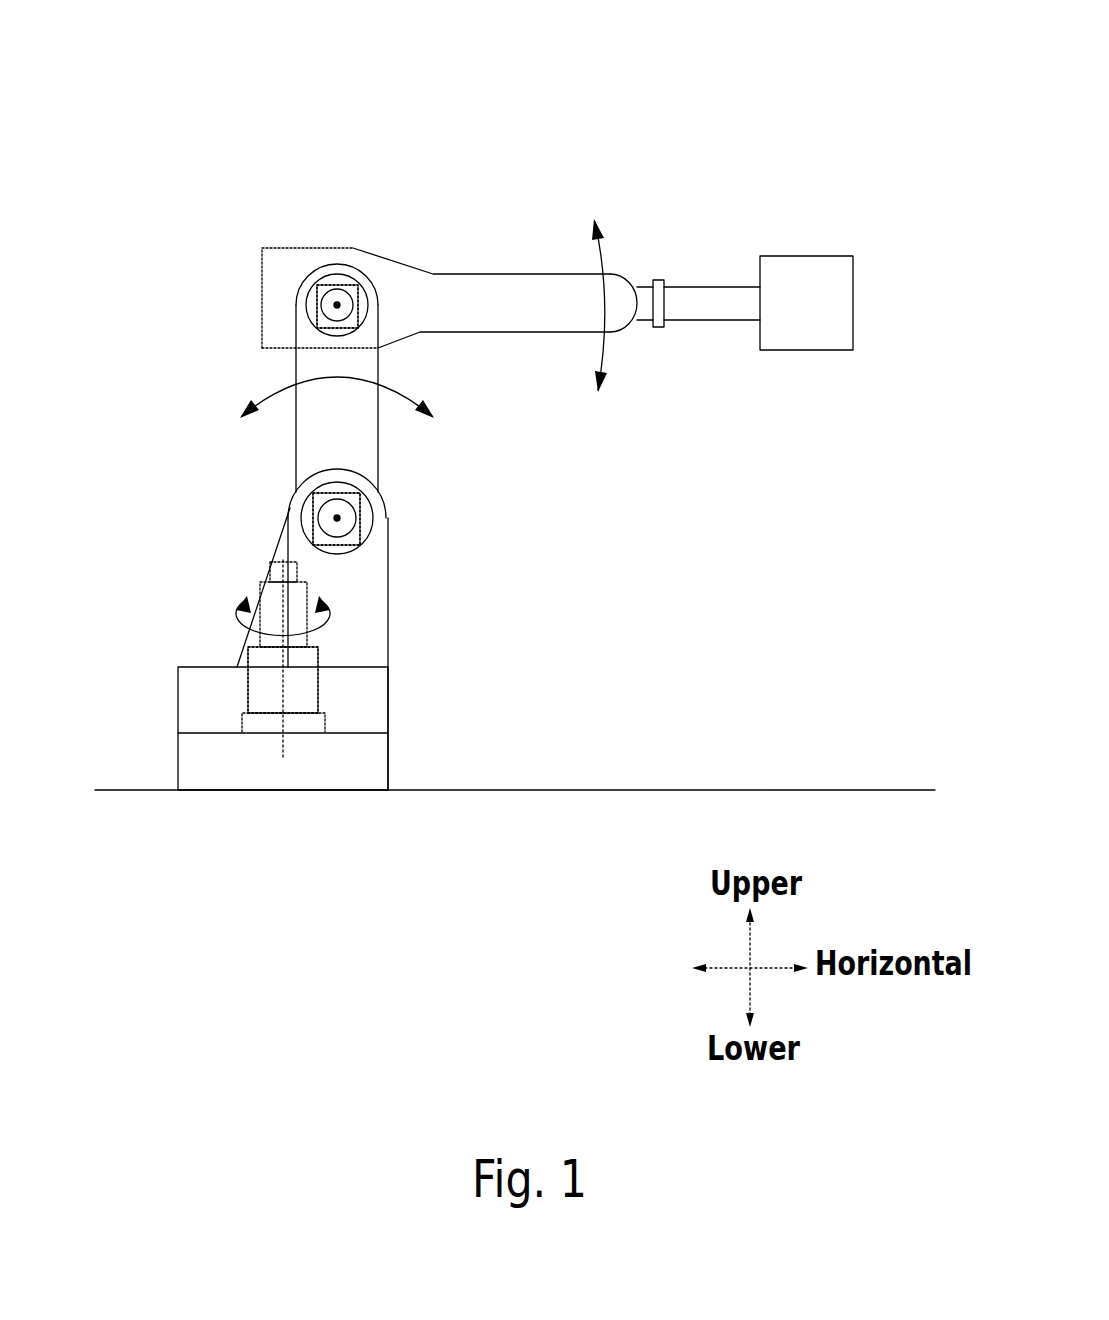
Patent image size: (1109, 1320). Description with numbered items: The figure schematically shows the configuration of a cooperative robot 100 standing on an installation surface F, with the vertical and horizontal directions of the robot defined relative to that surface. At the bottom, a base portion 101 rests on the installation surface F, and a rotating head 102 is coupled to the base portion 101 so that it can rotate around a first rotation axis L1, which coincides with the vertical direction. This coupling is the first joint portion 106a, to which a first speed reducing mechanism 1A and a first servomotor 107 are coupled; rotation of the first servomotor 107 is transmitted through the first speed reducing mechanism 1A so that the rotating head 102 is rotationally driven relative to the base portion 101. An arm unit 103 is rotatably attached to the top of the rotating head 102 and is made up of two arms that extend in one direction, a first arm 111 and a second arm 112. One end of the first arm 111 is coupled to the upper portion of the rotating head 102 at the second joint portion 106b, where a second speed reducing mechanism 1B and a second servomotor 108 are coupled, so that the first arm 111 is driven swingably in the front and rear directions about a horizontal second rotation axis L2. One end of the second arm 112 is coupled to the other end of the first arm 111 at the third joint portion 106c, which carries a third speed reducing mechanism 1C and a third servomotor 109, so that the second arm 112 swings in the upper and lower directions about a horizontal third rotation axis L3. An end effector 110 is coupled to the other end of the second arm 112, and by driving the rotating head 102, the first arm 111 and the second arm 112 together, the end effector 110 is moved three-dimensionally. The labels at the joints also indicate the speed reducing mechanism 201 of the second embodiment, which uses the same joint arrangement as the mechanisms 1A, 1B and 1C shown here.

The cooperative robot 100 is at (731, 138).
The base portion 101 is at (372, 755).
The rotating head 102 is at (372, 630).
The arm unit 103 is at (405, 250).
The first joint portion 106a is at (262, 668).
The second joint portion 106b is at (300, 480).
The third joint portion 106c is at (318, 284).
The first servomotor 107 is at (265, 590).
The second servomotor 108 is at (362, 494).
The third servomotor 109 is at (306, 298).
The end effector 110 is at (803, 272).
The first arm 111 is at (370, 438).
The second arm 112 is at (536, 290).
The first rotation axis L1 is at (285, 508).
The second rotation axis L2 is at (342, 516).
The third rotation axis L3 is at (337, 303).
The first speed reducing mechanism 1A is at (252, 656).
The second speed reducing mechanism 1B is at (362, 542).
The third speed reducing mechanism 1C is at (314, 319).
The speed reducing mechanism 201 is at (322, 499).
The installation surface F is at (805, 788).